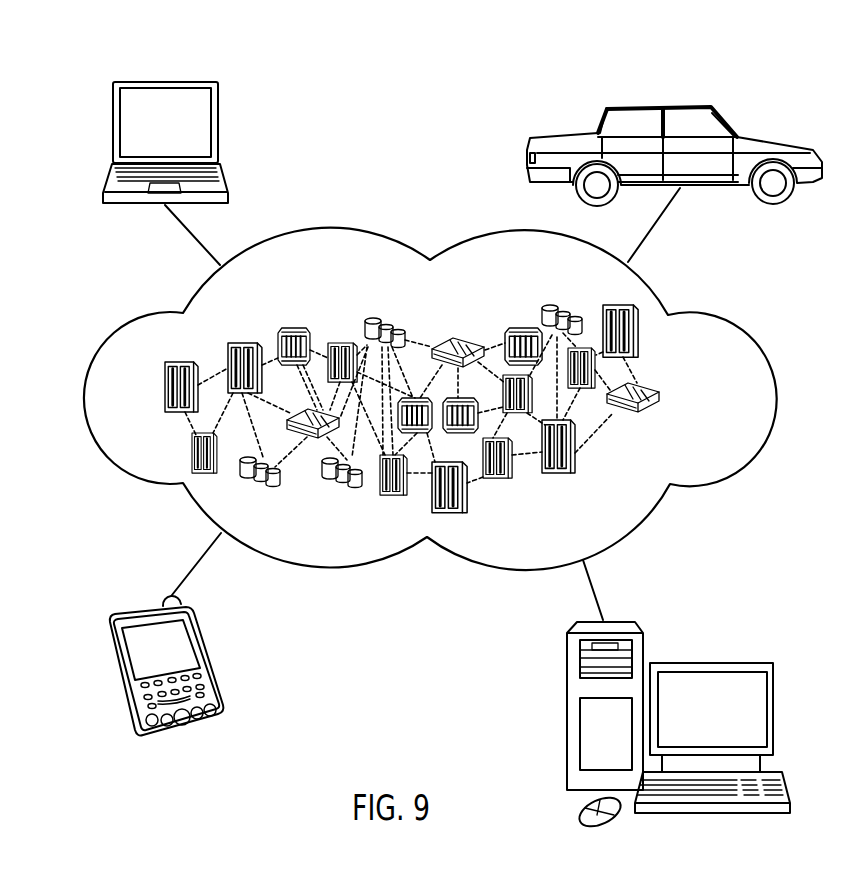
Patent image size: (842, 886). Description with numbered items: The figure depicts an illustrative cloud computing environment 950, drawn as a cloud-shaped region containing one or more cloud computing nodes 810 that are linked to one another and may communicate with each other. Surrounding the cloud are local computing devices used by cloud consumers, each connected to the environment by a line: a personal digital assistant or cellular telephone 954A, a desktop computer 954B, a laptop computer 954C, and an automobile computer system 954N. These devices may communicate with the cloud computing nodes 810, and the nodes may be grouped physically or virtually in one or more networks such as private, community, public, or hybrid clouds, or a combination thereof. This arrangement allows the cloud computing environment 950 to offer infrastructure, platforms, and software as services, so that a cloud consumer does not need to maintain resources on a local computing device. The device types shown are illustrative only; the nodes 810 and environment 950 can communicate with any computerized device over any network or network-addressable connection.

The cloud computing environment 950 is at (726, 320).
The cloud computing node 810 is at (668, 400).
The personal digital assistant (PDA) or cellular telephone 954A is at (148, 607).
The desktop computer 954B is at (712, 662).
The laptop computer 954C is at (165, 82).
The automobile computer system 954N is at (656, 113).